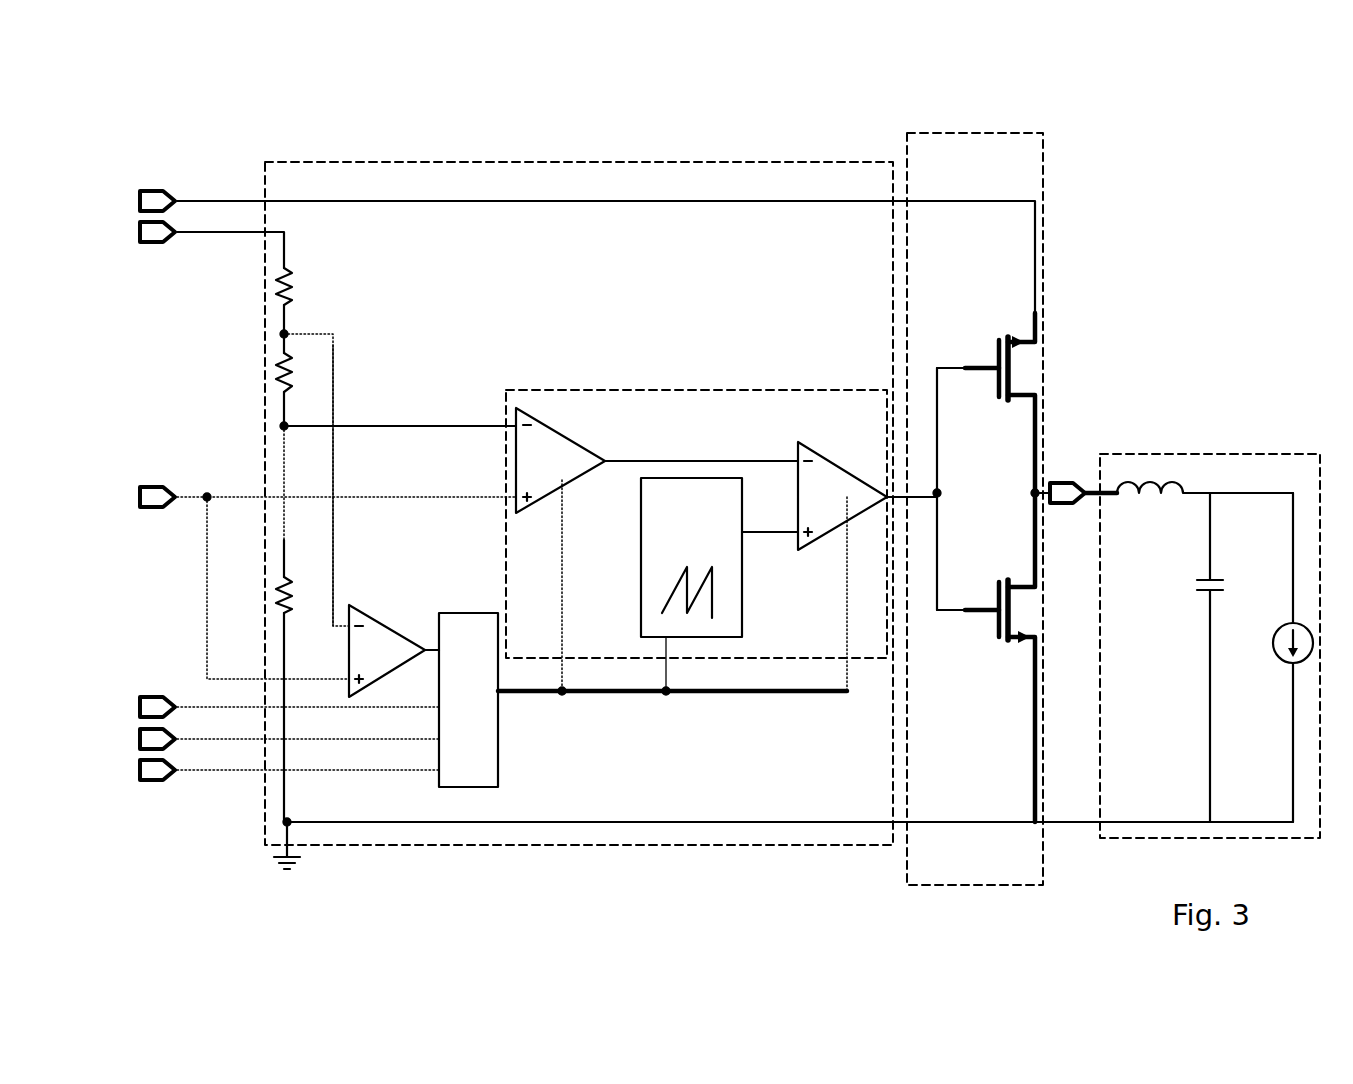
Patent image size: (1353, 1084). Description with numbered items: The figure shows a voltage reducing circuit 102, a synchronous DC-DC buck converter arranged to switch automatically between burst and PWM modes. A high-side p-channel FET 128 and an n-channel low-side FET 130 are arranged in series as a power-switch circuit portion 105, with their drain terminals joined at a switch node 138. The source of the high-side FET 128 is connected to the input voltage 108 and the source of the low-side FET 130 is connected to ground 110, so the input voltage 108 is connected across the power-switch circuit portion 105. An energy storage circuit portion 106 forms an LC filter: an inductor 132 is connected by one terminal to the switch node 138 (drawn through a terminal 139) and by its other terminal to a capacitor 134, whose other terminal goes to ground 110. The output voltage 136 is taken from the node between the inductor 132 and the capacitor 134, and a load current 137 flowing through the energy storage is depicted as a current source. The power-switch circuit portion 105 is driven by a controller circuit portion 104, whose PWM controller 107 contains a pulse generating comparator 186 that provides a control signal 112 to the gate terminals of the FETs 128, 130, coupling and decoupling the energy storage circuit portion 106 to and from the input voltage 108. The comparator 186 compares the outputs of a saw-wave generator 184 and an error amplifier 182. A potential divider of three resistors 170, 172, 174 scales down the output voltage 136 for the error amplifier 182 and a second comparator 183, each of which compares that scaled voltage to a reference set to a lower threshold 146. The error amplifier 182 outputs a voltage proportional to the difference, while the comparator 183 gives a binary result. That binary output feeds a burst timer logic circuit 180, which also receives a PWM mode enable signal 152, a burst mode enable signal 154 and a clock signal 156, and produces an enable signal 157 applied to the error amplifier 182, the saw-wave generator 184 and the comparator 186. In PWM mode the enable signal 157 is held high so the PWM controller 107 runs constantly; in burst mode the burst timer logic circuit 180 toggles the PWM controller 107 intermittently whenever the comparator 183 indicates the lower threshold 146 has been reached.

The voltage reducing circuit 102 is at (260, 104).
The controller circuit portion 104 is at (580, 161).
The power-switch circuit portion 105 is at (1047, 172).
The energy storage circuit portion 106 is at (1226, 453).
The PWM controller 107 is at (620, 390).
The input voltage 108 is at (558, 249).
The ground 110 is at (779, 861).
The control signal 112 is at (913, 490).
The high-side p-channel field-effect-transistor 128 is at (1020, 342).
The low-side n-channel field-effect-transistor 130 is at (1000, 642).
The inductor 132 is at (1157, 492).
The capacitor 134 is at (1200, 592).
The output voltage 136 is at (1257, 495).
The load current 137 is at (1272, 649).
The switch node 138 is at (1030, 488).
The switch node terminal 139 is at (1066, 480).
The lower threshold 146 is at (299, 580).
The PWM mode enable signal 152 is at (260, 708).
The burst mode enable signal 154 is at (260, 740).
The clock signal 156 is at (260, 771).
The enable signal 157 is at (590, 703).
The resistor 170 is at (290, 277).
The resistor 172 is at (290, 390).
The resistor 174 is at (277, 578).
The burst timer logic circuit 180 is at (468, 700).
The error amplifier 182 is at (541, 549).
The second comparator 183 is at (394, 651).
The saw-wave generator 184 is at (719, 584).
The pulse generating comparator 186 is at (867, 566).